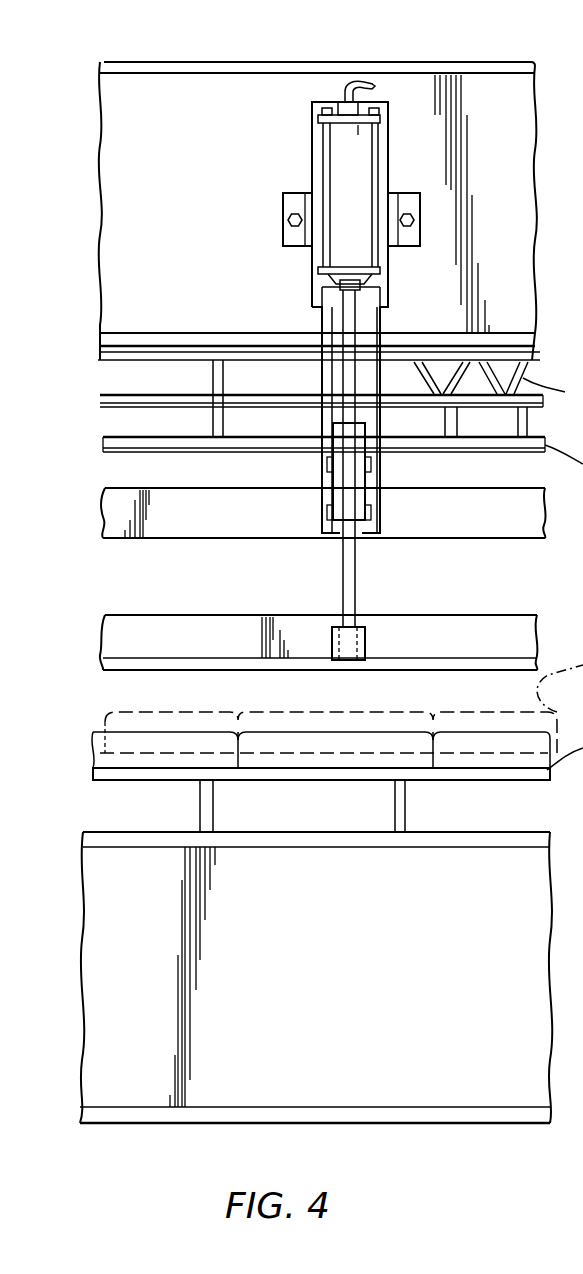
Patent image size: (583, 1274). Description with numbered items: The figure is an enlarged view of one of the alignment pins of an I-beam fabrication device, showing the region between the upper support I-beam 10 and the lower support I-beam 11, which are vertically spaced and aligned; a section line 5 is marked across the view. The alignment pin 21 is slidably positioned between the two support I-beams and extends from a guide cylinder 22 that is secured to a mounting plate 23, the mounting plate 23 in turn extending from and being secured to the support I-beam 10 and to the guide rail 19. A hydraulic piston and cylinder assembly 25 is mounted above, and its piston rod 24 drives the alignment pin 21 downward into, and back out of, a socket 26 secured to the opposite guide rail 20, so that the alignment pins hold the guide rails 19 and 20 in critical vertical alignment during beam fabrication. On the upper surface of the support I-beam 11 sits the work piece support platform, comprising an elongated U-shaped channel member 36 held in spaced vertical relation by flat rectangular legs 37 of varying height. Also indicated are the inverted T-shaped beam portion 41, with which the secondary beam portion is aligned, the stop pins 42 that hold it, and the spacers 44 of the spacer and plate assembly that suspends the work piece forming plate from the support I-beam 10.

The section line 5- 5 is at (57, 118).
The support I-beam 10 is at (173, 128).
The support I-beam 11 is at (431, 929).
The guide rail 19 is at (114, 532).
The guide rail 20 is at (485, 622).
The alignment pin 21 is at (343, 575).
The guide cylinder 22 is at (345, 477).
The mounting plate 23 is at (318, 176).
The piston rod 24 is at (351, 219).
The hydraulic piston and cylinder assembly 25 is at (348, 140).
The socket 26 is at (365, 645).
The elongated U-shaped channel member 36 is at (515, 775).
The flat rectangular legs 37 is at (395, 800).
The inverted T-shaped beam portion 41 is at (535, 358).
The stop pins 42 is at (553, 392).
The spacers 44 is at (218, 418).